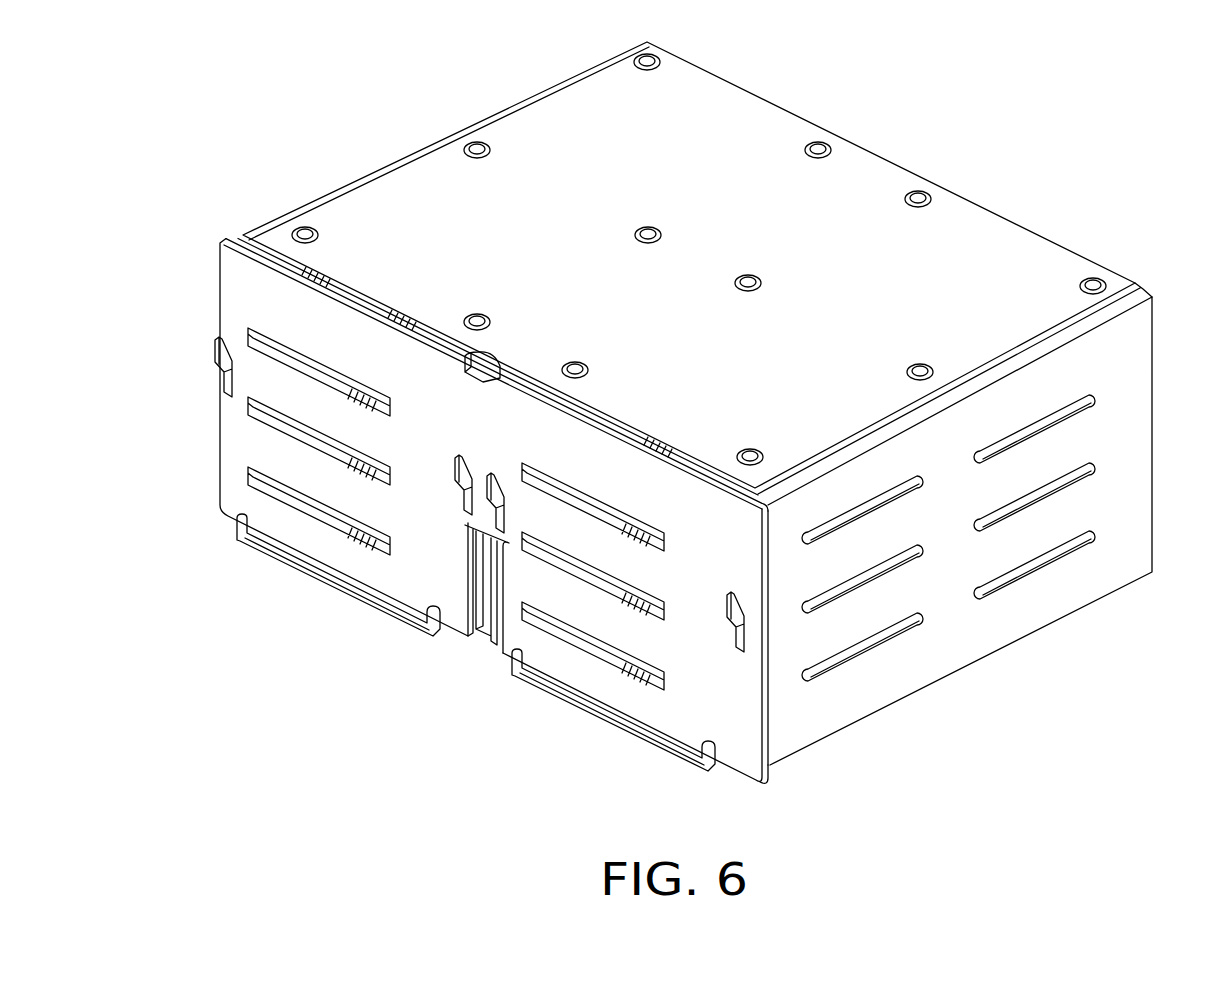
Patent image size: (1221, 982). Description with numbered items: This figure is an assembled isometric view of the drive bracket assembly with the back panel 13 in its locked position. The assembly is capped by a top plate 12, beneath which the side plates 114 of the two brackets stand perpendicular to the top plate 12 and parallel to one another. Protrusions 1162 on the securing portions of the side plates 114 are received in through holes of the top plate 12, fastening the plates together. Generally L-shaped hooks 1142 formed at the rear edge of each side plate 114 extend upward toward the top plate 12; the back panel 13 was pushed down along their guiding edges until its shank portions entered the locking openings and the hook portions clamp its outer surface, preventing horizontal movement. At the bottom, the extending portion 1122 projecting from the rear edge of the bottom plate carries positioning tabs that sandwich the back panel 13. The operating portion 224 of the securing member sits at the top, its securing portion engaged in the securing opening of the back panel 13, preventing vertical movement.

The top plate 12 is at (1003, 258).
The protrusion 1162 is at (1093, 285).
The back panel 13 is at (240, 431).
The side plate 114 is at (1108, 565).
The operating portion 224 is at (483, 368).
The extending portion 1122 is at (560, 690).
The hook 1142 is at (728, 622).